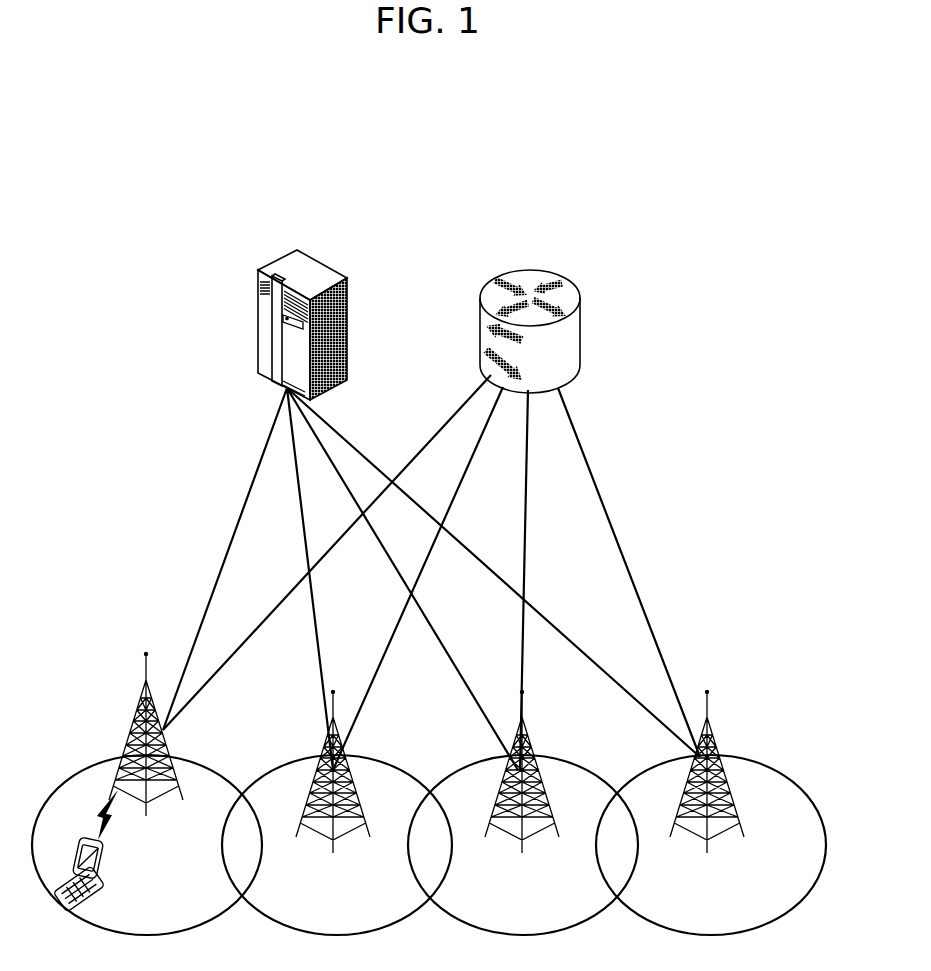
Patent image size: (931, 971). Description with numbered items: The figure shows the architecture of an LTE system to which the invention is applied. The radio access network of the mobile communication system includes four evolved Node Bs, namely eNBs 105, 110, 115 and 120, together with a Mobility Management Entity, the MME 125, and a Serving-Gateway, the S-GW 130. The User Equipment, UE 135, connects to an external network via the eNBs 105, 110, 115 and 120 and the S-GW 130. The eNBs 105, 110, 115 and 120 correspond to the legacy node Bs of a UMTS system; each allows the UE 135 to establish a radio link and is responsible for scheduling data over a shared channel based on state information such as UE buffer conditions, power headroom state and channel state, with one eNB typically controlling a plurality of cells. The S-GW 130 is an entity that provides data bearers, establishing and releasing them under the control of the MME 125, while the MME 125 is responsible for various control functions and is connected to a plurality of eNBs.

The evolved Node B (eNB) 105 is at (130, 712).
The evolved Node B (eNB) 110 is at (325, 737).
The evolved Node B (eNB) 115 is at (533, 735).
The evolved Node B (eNB) 120 is at (718, 738).
The Mobility Management Entity (MME) 125 is at (288, 268).
The Serving-Gateway (S-GW) 130 is at (527, 273).
The User Equipment (UE) 135 is at (100, 867).